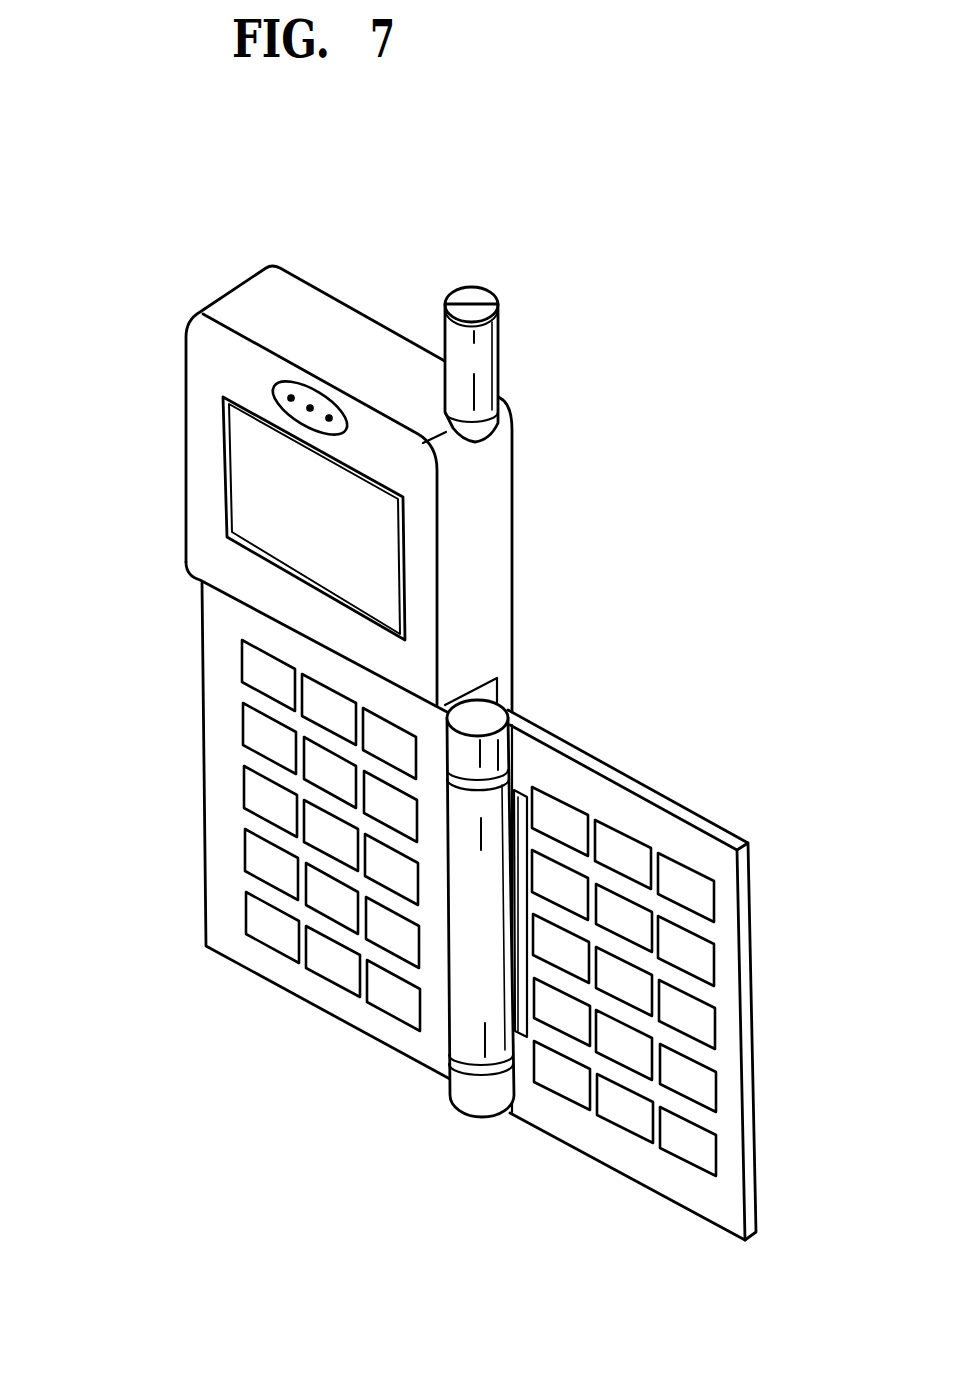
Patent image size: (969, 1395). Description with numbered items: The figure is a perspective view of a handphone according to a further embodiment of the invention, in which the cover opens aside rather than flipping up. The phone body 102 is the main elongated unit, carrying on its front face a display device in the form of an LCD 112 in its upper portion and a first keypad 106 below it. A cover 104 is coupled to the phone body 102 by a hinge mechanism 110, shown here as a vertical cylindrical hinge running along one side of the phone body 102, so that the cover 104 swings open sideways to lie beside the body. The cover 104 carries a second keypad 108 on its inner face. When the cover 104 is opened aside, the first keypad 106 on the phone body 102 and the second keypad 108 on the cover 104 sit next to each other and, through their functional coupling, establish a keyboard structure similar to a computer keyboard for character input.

The phone body 102 is at (202, 742).
The cover 104 is at (710, 828).
The first keypad 106 is at (226, 826).
The second keypad 108 is at (731, 1091).
The hinge mechanism 110 is at (475, 1102).
The LCD 112 is at (240, 478).